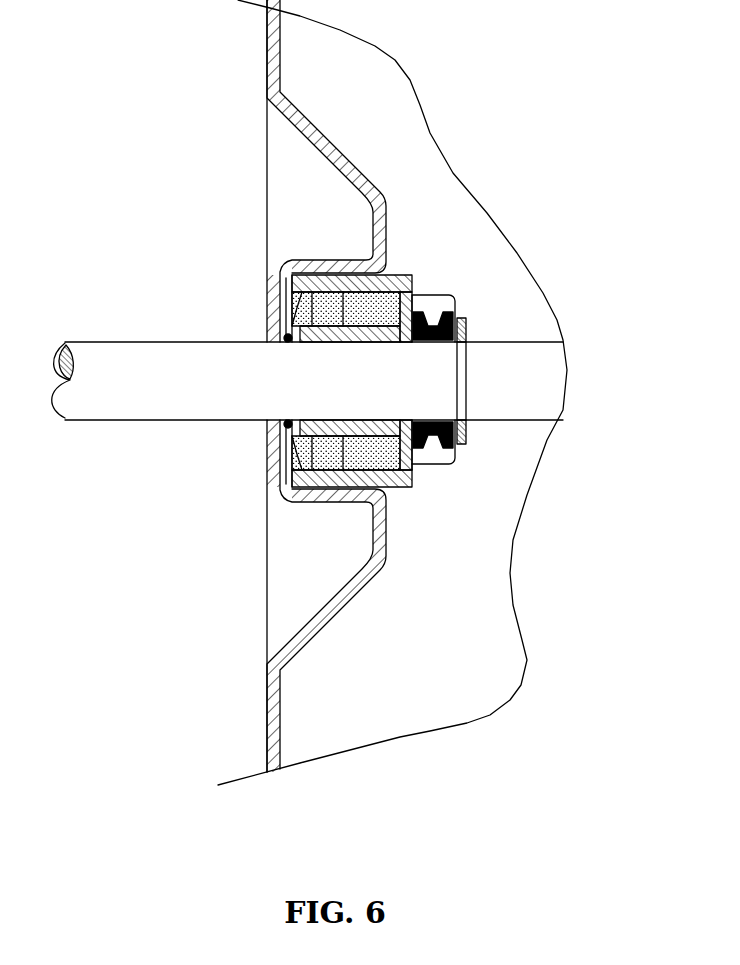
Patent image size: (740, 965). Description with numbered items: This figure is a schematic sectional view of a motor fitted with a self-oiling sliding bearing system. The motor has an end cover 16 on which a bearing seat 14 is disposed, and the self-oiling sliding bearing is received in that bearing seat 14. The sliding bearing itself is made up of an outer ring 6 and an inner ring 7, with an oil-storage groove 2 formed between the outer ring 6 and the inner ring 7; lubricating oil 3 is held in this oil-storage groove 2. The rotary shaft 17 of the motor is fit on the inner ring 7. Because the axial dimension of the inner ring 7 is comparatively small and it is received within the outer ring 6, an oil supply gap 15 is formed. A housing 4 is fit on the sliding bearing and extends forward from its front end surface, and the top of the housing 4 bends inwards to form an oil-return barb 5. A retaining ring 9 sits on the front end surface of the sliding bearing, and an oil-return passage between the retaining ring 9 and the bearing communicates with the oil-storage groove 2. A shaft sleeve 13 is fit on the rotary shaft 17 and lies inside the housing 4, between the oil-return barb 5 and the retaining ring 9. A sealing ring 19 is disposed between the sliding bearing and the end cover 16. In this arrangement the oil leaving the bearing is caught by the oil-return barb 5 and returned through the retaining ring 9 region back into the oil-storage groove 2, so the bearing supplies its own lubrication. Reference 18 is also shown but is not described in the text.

The oil-storage groove 2 is at (386, 503).
The lubricating oil 3 is at (422, 425).
The housing 4 is at (418, 272).
The oil-return barb 5 is at (460, 462).
The outer ring 6 is at (280, 308).
The inner ring 7 is at (345, 426).
The retaining ring 9 is at (414, 462).
The shaft sleeve 13 is at (487, 224).
The bearing seat 14 is at (267, 283).
The oil supply gap 15 is at (281, 458).
The end cover 16 is at (273, 386).
The rotary shaft 17 is at (307, 346).
The retaining ring 18 is at (523, 321).
The sealing ring 19 is at (226, 412).